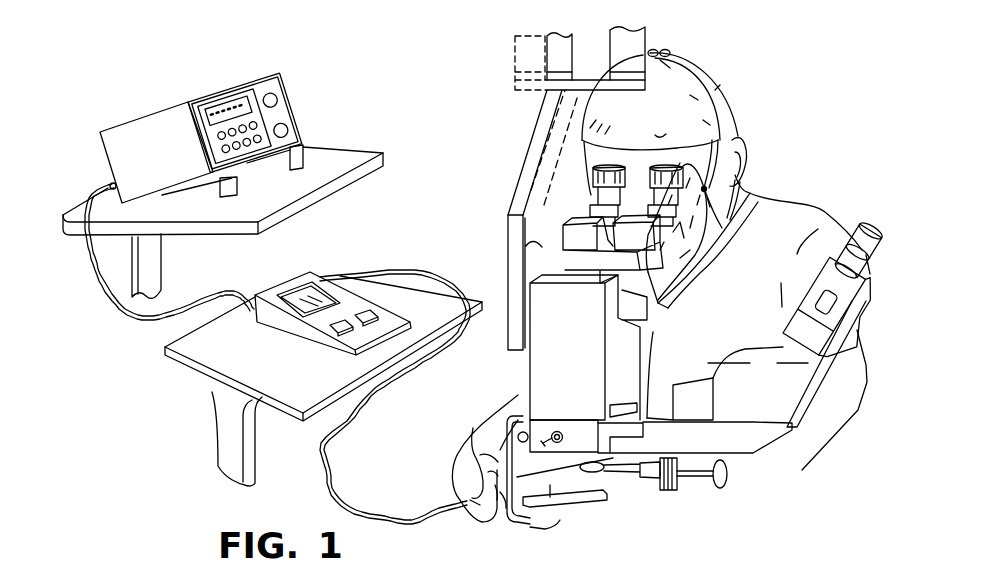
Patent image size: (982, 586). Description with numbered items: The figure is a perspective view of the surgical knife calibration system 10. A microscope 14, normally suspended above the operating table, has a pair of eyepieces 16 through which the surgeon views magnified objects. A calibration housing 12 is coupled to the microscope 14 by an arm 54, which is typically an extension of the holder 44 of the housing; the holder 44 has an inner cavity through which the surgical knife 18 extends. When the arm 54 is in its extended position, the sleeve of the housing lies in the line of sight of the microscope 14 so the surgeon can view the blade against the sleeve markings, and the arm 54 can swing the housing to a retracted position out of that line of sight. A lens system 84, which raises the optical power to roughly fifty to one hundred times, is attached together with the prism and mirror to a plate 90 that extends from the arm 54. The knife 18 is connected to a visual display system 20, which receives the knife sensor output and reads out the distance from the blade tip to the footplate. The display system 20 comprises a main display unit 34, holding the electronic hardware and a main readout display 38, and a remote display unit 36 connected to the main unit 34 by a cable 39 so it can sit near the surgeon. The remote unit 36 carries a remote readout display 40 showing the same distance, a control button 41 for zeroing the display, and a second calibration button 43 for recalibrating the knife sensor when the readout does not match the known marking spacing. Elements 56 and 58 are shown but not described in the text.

The system 10 is at (470, 143).
The calibration housing 12 is at (517, 525).
The microscope 14 is at (583, 356).
The eyepieces 16 is at (672, 168).
The surgical knife 18 is at (463, 512).
The visual display system 20 is at (347, 229).
The main display unit 34 is at (142, 130).
The remote display unit 36 is at (272, 322).
The main readout display 38 is at (237, 110).
The cable 39 is at (112, 302).
The remote readout display 40 is at (292, 292).
The control button 41 is at (372, 318).
The second calibration button 43 is at (333, 330).
The holder 44 is at (497, 527).
The arm 54 is at (507, 442).
The base plate 56 is at (732, 445).
The mounting block 58 is at (638, 412).
The lens system 84 is at (607, 472).
The plate 90 is at (595, 477).